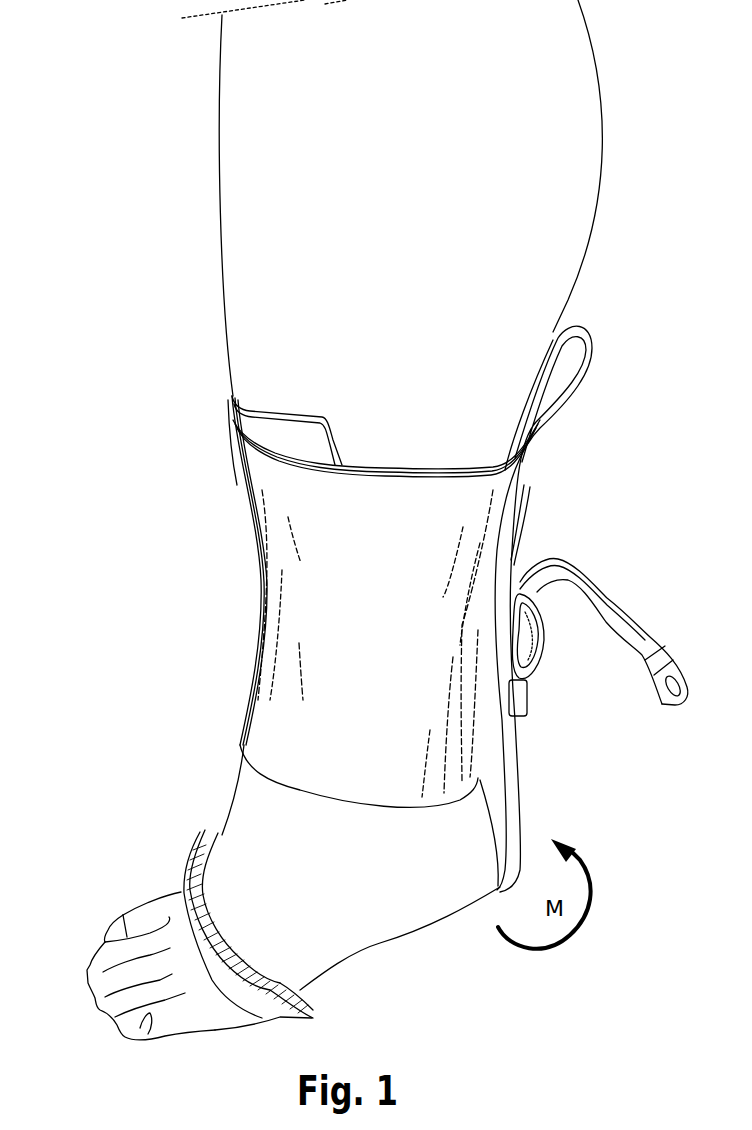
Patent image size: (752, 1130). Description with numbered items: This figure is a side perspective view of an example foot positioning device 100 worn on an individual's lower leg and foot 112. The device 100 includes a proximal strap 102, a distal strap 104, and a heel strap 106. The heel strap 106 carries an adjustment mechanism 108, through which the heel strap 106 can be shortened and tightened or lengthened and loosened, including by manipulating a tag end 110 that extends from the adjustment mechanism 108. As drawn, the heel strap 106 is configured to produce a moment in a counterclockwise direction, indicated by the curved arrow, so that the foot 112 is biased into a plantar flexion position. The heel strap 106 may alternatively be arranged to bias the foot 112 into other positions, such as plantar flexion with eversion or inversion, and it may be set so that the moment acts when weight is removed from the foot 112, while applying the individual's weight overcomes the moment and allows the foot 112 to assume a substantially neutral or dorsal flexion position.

The foot positioning device 100 is at (158, 70).
The proximal strap 102 is at (278, 499).
The distal strap 104 is at (280, 1016).
The heel strap 106 is at (512, 780).
The adjustment mechanism 108 is at (541, 628).
The tag end 110 is at (616, 608).
The foot 112 is at (287, 903).